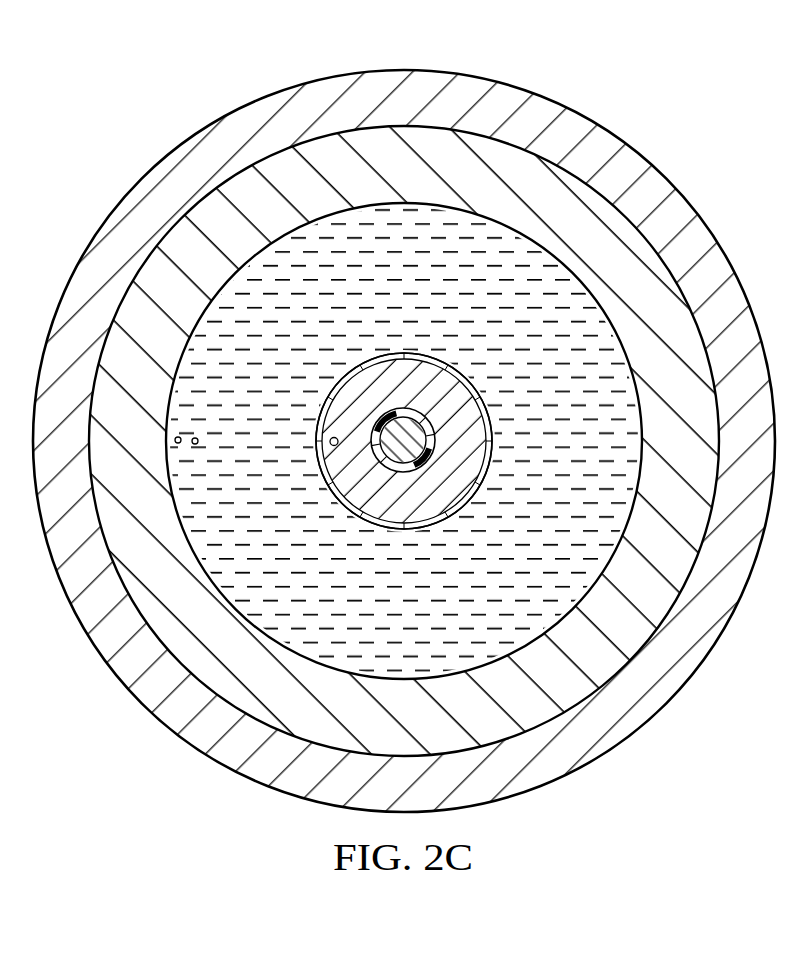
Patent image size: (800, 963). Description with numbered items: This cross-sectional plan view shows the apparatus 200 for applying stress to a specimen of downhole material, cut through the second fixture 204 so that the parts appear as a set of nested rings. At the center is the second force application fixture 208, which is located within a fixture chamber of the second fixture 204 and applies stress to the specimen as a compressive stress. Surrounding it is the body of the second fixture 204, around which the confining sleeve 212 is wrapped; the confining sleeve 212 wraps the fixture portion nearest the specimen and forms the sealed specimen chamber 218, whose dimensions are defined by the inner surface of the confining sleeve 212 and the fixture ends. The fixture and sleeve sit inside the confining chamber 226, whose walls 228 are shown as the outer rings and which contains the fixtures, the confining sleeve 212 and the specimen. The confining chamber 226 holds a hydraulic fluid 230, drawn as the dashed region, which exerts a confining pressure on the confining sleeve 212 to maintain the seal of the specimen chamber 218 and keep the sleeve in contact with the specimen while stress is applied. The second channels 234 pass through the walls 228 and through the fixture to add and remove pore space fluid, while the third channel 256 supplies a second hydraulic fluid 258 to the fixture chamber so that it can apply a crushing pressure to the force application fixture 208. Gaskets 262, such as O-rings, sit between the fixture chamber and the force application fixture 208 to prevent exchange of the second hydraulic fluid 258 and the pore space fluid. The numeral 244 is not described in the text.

The apparatus 200 is at (162, 113).
The second fixture 204 is at (350, 403).
The second force application fixture 208 is at (421, 454).
The confining sleeve 212 is at (447, 372).
The sealed specimen chamber 218 is at (355, 514).
The confining chamber 226 is at (498, 225).
The walls 228 is at (421, 133).
The hydraulic fluid 230 is at (589, 453).
The second channels 234 is at (195, 438).
The outer housing 244 is at (514, 92).
The third channel 256 is at (330, 442).
The second hydraulic fluid 258 is at (179, 443).
The gaskets 262 is at (397, 470).